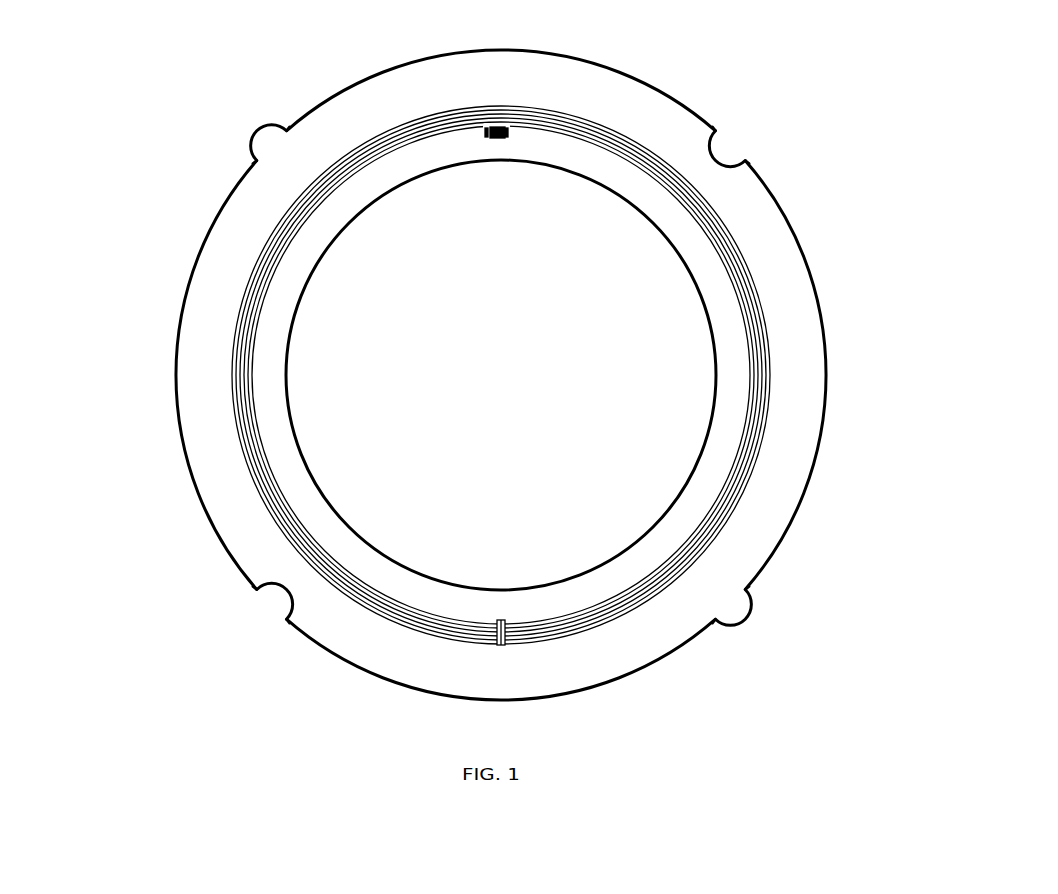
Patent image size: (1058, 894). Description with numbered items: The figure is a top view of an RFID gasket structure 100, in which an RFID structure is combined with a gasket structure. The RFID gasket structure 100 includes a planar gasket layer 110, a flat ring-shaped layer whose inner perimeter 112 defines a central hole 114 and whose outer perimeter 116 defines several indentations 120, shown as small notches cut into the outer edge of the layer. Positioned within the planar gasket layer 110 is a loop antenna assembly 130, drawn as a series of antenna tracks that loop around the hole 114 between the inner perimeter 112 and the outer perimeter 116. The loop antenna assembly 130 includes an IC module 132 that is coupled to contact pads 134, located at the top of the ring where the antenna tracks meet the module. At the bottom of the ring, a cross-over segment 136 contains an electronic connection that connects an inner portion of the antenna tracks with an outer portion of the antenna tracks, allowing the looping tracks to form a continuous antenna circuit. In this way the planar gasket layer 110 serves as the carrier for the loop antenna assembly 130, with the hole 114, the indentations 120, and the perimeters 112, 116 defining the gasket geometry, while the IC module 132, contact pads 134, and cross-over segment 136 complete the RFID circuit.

The RFID gasket structure 100 is at (368, 37).
The planar gasket layer 110 is at (380, 642).
The inner perimeter 112 is at (633, 535).
The hole 114 is at (490, 357).
The outer perimeter 116 is at (208, 525).
The indentations 120 is at (797, 617).
The loop antenna assembly 130 is at (228, 383).
The IC module 132 is at (496, 148).
The contact pads 134 is at (485, 122).
The cross-over segment 136 is at (492, 618).